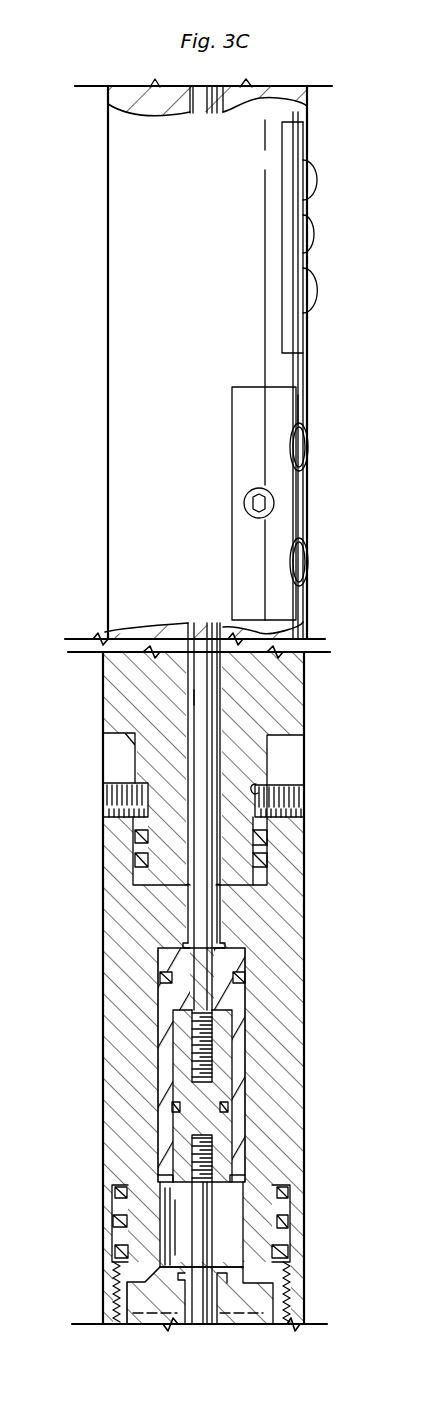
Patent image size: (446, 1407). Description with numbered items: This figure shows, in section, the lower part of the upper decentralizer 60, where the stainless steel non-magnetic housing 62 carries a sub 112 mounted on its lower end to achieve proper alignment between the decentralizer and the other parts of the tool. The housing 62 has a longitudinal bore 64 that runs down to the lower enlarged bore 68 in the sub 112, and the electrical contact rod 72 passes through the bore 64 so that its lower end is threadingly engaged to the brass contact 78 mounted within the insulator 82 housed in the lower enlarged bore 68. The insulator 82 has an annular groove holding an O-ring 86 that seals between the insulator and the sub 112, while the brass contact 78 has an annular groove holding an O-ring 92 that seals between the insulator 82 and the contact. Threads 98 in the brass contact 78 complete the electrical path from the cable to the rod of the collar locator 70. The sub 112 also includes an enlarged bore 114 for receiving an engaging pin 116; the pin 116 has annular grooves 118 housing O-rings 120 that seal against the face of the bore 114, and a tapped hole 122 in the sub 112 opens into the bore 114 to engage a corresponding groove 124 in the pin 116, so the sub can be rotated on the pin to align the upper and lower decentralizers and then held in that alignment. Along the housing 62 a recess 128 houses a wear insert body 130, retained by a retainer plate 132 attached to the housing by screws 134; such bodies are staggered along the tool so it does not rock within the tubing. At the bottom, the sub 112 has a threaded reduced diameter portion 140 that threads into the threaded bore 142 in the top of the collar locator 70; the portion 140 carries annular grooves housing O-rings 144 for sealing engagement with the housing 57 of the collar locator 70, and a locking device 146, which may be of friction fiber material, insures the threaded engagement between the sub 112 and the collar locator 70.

The housing of collar locator 57 is at (101, 1308).
The upper decentralizer 60 is at (105, 273).
The housing 62 is at (283, 1017).
The longitudinal bore 64 is at (206, 108).
The lower enlarged bore 68 is at (260, 1177).
The collar locator 70 is at (101, 1278).
The electrical contact rod 72 is at (195, 697).
The brass contact 78 is at (183, 1038).
The insulator 82 is at (172, 998).
The O-ring 86 is at (246, 982).
The O-ring 92 is at (160, 1109).
The threads 98 is at (207, 1148).
The sub 112 is at (278, 1062).
The enlarged bore 114 is at (268, 872).
The engaging pin 116 is at (248, 877).
The annular grooves 118 is at (140, 823).
The O-rings 120 is at (135, 857).
The tapped hole 122 is at (303, 791).
The groove 124 is at (257, 787).
The recess 128 is at (233, 578).
The wear insert body 130 is at (308, 448).
The retainer plate 132 is at (287, 411).
The screws 134 is at (271, 505).
The threaded reduced diameter portion 140 is at (260, 1273).
The threaded bore 142 is at (290, 1256).
The O-rings 144 is at (288, 1222).
The locking device 146 is at (113, 1256).